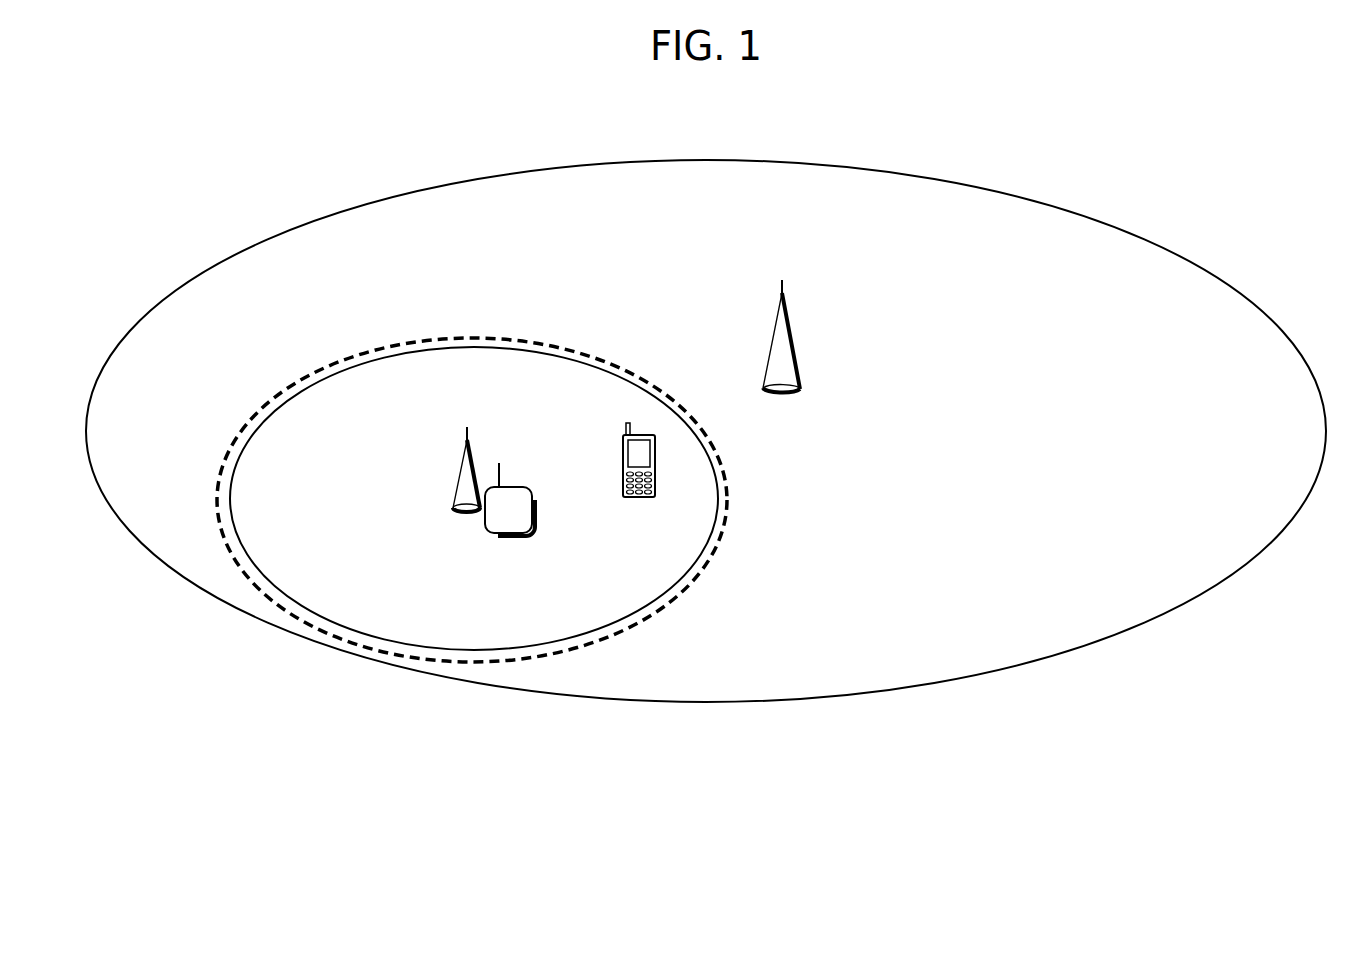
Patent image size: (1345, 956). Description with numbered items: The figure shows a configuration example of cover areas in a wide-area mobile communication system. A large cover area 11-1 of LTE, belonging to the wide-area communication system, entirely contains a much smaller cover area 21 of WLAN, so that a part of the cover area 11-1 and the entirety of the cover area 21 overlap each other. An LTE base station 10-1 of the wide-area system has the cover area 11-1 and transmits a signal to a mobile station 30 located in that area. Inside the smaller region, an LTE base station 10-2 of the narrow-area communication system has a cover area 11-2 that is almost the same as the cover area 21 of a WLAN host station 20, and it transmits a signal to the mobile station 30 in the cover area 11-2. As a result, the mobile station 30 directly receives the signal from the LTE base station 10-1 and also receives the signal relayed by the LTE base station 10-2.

The cover area of LTE 11-1 is at (1093, 218).
The cover area of LTE base station 10-2 11-2 is at (328, 374).
The cover area of WLAN 21 is at (482, 338).
The LTE base station 10-1 is at (790, 317).
The LTE base station 10-2 is at (463, 450).
The WLAN host station 20 is at (508, 536).
The mobile station 30 is at (623, 457).